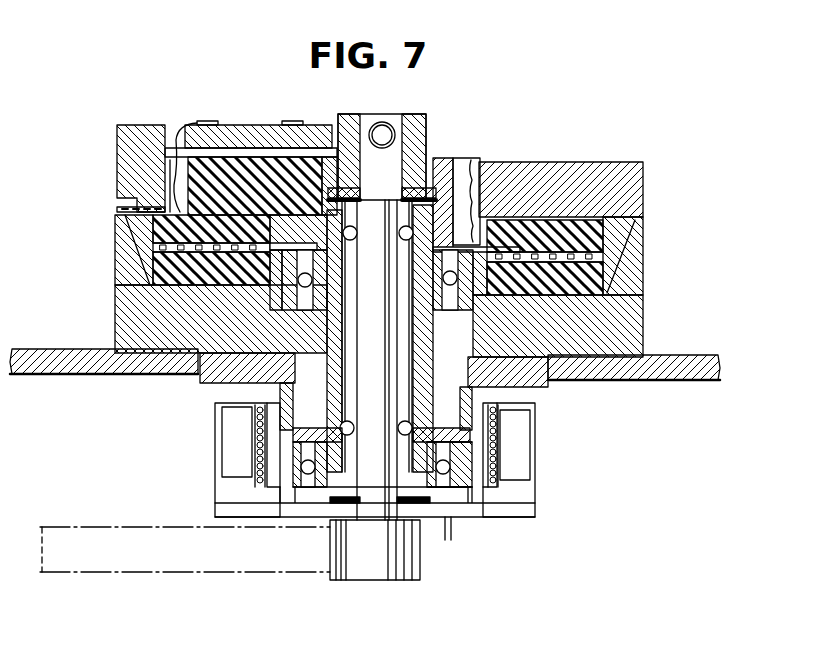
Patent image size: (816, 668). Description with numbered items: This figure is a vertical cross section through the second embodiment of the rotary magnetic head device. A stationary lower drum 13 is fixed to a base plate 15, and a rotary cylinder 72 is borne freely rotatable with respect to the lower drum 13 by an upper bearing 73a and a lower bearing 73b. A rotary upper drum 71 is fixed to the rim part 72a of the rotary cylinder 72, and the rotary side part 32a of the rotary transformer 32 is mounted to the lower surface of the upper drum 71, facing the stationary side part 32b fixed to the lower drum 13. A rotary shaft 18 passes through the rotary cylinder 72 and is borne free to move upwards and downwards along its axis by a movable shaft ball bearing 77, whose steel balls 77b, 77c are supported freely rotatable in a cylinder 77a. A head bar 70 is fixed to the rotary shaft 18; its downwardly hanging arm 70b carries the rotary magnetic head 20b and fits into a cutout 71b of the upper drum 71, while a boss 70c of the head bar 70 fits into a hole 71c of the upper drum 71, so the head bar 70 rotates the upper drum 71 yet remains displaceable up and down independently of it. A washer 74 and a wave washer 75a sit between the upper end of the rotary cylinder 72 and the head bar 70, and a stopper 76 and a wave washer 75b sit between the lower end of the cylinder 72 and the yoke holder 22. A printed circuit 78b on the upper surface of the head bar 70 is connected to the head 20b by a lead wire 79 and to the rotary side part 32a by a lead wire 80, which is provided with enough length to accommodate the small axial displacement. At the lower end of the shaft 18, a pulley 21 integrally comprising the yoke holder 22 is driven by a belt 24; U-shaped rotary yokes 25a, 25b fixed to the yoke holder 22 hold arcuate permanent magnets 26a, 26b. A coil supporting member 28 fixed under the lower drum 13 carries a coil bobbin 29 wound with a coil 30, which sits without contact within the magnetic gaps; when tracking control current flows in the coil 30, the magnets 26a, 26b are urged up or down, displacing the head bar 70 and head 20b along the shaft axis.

The stationary lower drum 13 is at (640, 325).
The base plate 15 is at (683, 380).
The rotary shaft 18 is at (357, 342).
The rotary magnetic head 20b is at (118, 209).
The pulley 21 is at (362, 575).
The yoke holder 22 is at (535, 517).
The belt 24 is at (175, 572).
The rotary yoke 25a is at (535, 483).
The rotary yoke 25b is at (215, 465).
The permanent magnet 26a is at (525, 432).
The permanent magnet 26b is at (230, 422).
The coil supporting member 28 is at (525, 387).
The coil bobbin 29 is at (488, 517).
The coil 30 is at (498, 460).
The rotary transformer 32 is at (610, 257).
The rotary side part 32a is at (603, 228).
The stationary side part 32b is at (600, 280).
The head bar 70 is at (246, 125).
The arm 70b is at (118, 140).
The boss 70c is at (410, 125).
The rotary upper drum 71 is at (572, 162).
The cutout 71b is at (188, 180).
The hole 71c is at (330, 157).
The rotary cylinder 72 is at (425, 370).
The rim part 72a is at (270, 150).
The bearing 73a is at (473, 305).
The bearing 73b is at (460, 490).
The washer 74 is at (435, 160).
The wave washer 75a is at (470, 158).
The wave washer 75b is at (340, 505).
The stopper 76 is at (420, 505).
The movable shaft ball bearing 77 is at (342, 360).
The cylinder 77a is at (400, 420).
The steel balls 77b is at (405, 235).
The steel balls 77c is at (405, 436).
The printed circuit 78b is at (228, 121).
The lead wire 79 is at (175, 160).
The lead wire 80 is at (473, 162).